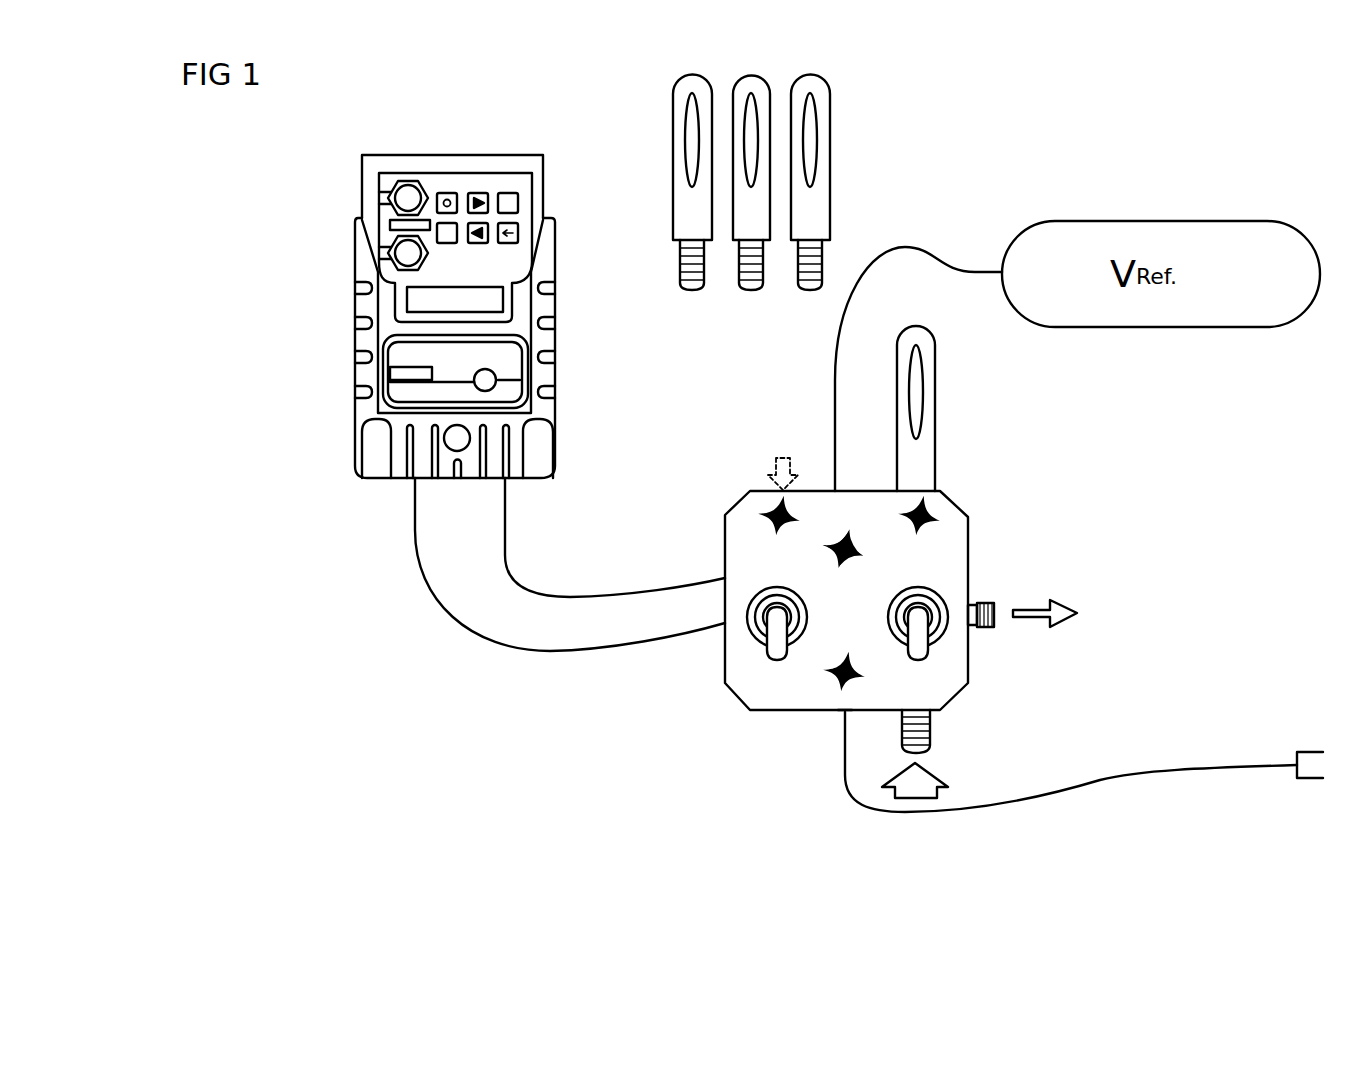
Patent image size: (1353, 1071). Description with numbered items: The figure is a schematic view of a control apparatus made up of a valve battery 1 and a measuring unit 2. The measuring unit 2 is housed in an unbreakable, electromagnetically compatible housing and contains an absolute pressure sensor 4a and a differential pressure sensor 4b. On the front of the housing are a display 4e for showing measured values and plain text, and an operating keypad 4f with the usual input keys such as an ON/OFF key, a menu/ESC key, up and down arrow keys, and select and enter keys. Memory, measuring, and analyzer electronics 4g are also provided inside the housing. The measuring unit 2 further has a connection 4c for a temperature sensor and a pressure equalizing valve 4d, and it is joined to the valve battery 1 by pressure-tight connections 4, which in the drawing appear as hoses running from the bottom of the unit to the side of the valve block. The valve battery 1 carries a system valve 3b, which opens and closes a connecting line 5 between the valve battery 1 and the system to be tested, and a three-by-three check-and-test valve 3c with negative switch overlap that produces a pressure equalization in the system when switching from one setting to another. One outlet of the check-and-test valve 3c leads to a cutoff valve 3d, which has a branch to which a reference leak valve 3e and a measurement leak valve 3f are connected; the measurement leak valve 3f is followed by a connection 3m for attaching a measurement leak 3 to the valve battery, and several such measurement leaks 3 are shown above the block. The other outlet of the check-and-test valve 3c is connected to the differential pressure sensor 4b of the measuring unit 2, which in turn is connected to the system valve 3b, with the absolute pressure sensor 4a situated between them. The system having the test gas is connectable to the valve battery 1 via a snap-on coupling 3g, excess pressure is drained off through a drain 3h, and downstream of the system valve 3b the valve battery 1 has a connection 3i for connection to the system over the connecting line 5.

The valve battery 1 is at (944, 488).
The measuring unit 2 is at (407, 153).
The measurement leak 3 is at (765, 145).
The system valve 3b is at (933, 592).
The 3/3 check-and-test valve 3c is at (762, 590).
The cutoff valve 3d is at (838, 545).
The reference leak valve 3e is at (940, 517).
The measurement leak valve 3f is at (767, 513).
The snap-on coupling 3g is at (930, 735).
The drain 3h is at (990, 627).
The connection 3i is at (845, 712).
The connection 3m is at (772, 458).
The pressure-tight connections 4 is at (513, 609).
The absolute pressure sensor 4a is at (388, 477).
The differential pressure sensor 4b is at (507, 475).
The connection 4c is at (364, 216).
The pressure equalizing valve 4d is at (460, 478).
The display 4e is at (416, 301).
The operating keypad 4f is at (448, 158).
The memory, measuring, and analyzer electronics 4g is at (358, 340).
The connecting line 5 is at (1165, 767).